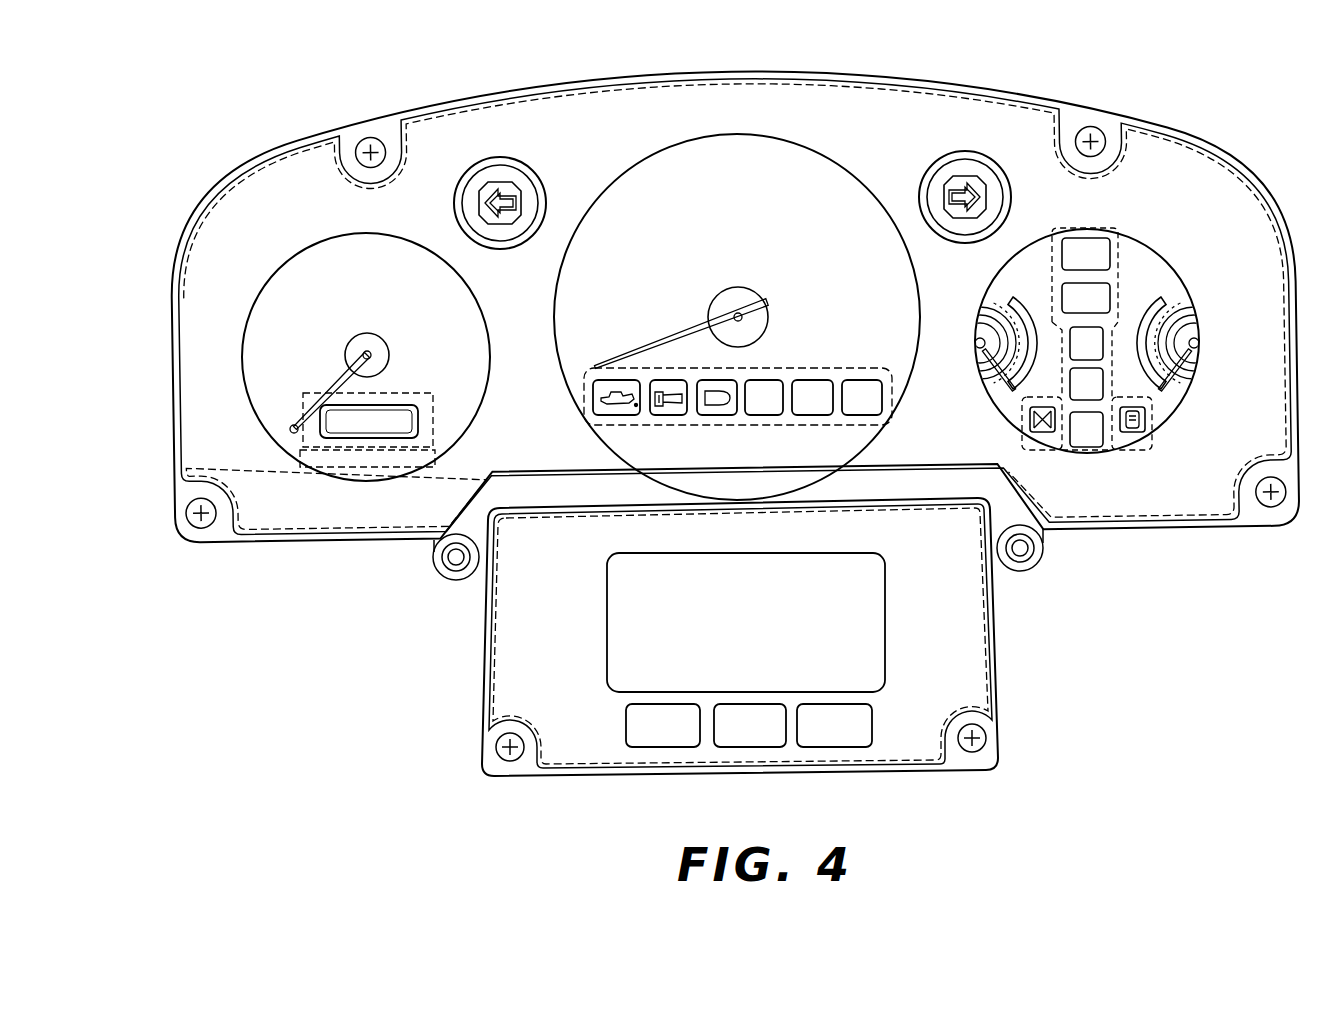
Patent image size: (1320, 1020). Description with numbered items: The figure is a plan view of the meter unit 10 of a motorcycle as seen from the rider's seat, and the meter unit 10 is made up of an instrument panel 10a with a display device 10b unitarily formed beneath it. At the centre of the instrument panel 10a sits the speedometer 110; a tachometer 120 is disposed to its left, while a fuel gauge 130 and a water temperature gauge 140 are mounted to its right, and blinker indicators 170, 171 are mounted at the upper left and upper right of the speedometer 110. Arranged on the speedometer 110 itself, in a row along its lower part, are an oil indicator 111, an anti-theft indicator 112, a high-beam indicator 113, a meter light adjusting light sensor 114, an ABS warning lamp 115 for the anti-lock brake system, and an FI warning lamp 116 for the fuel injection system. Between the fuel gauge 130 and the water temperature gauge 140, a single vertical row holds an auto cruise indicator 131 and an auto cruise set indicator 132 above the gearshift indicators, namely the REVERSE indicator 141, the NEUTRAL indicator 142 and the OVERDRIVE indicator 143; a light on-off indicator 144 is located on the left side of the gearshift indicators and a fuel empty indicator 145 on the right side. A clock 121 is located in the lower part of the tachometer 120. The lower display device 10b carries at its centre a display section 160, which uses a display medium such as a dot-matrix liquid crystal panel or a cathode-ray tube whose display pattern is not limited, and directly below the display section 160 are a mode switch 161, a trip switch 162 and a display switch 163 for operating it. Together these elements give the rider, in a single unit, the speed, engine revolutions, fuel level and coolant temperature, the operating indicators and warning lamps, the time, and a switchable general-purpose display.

The meter unit 10 is at (734, 411).
The instrument panel 10a is at (606, 103).
The display device 10b is at (967, 642).
The speedometer 110 is at (846, 172).
The oil indicator 111 is at (605, 417).
The anti-theft indicator 112 is at (665, 416).
The high-beam indicator 113 is at (730, 416).
The meter light adjusting light sensor 114 is at (776, 416).
The ABS warning lamp 115 is at (820, 416).
The FI warning lamp 116 is at (870, 416).
The tachometer 120 is at (313, 240).
The clock 121 is at (330, 437).
The fuel gauge 130 is at (1165, 297).
The auto cruise indicator 131 is at (1088, 245).
The auto cruise set indicator 132 is at (1108, 287).
The water temperature gauge 140 is at (1027, 292).
The gearshift REVERSE indicator 141 is at (1105, 340).
The neutral indicator 142 is at (1072, 400).
The OVERDRIVE indicator 143 is at (1093, 447).
The light on-off indicator 144 is at (1030, 430).
The fuel empty indicator 145 is at (1140, 432).
The display section 160 is at (609, 640).
The mode switch 161 is at (655, 748).
The trip switch 162 is at (768, 748).
The display switch 163 is at (840, 748).
The blinker indicator 170 is at (523, 170).
The blinker indicator 171 is at (988, 168).